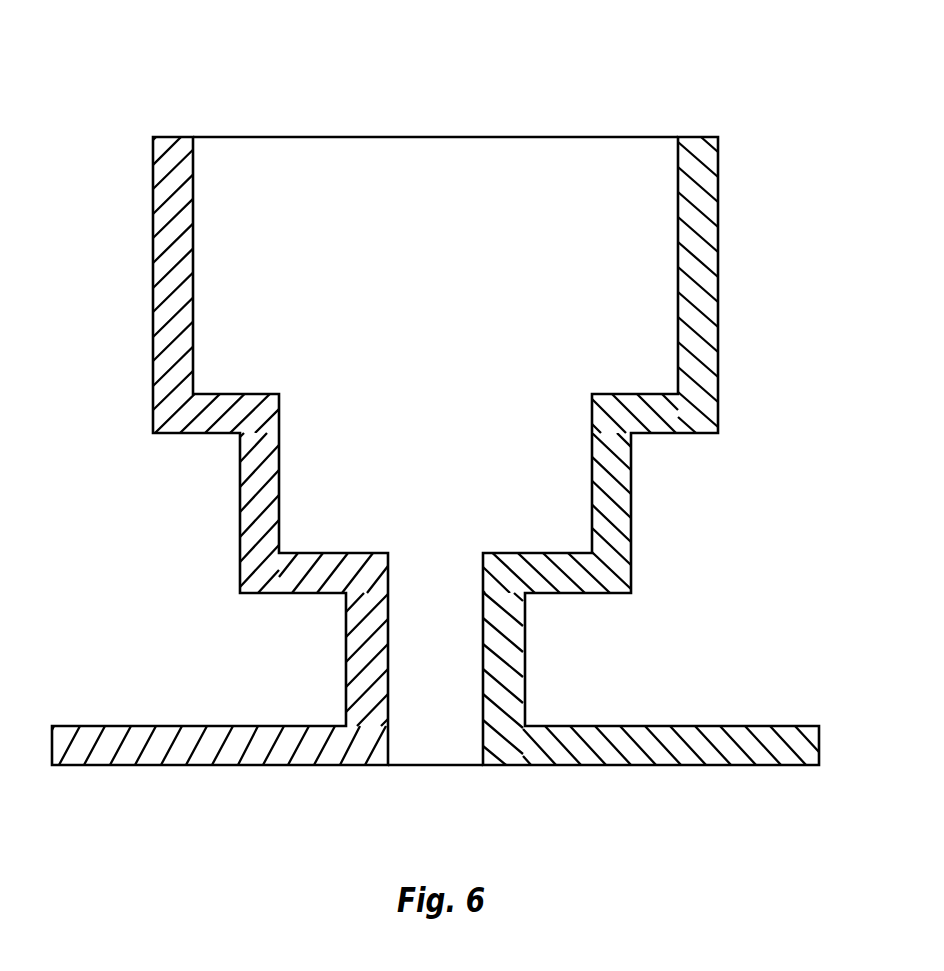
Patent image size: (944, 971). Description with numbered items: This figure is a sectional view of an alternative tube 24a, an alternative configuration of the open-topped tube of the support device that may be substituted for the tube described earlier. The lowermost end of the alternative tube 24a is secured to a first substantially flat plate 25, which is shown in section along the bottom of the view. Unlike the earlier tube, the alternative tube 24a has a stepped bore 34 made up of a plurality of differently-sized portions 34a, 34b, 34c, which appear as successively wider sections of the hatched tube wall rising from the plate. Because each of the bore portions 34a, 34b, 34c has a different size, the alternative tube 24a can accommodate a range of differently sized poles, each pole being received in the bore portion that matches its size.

The alternative tube 24a is at (435, 390).
The first substantially flat plate 25 is at (129, 764).
The stepped bore 34 is at (437, 728).
The bore portion 34a is at (375, 658).
The bore portion 34b is at (272, 491).
The bore portion 34c is at (187, 329).